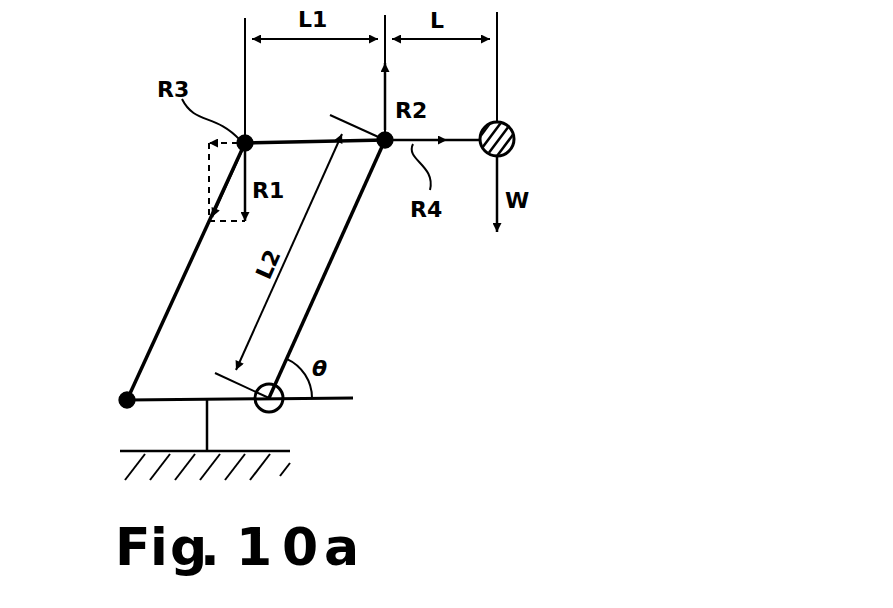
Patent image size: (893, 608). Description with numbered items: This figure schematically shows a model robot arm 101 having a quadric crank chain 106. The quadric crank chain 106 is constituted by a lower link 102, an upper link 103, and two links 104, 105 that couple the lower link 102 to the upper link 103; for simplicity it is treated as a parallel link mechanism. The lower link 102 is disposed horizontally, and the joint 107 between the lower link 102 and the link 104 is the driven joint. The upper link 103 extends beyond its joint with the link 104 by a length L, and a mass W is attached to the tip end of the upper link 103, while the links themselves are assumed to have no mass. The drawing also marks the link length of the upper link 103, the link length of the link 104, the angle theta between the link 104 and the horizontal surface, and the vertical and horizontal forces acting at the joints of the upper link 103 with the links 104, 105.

The robot arm 101 is at (472, 353).
The lower link 102 is at (170, 399).
The upper link 103 is at (293, 140).
The link 104 is at (331, 266).
The link 105 is at (163, 320).
The quadric crank chain 106 is at (172, 262).
The joint 107 is at (288, 404).